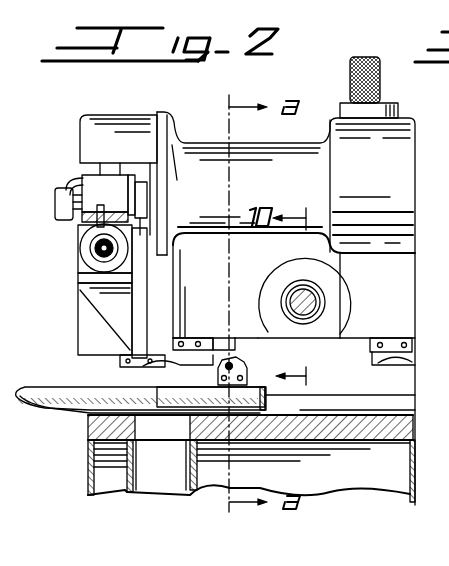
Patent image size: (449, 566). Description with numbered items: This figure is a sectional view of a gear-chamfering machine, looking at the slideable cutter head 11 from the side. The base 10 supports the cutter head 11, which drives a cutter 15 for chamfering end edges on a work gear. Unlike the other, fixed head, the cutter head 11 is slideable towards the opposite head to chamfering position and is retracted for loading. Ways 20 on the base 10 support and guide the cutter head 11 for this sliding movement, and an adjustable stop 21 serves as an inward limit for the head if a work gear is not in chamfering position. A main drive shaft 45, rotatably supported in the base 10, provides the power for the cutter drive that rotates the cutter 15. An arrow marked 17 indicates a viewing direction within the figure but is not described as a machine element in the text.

The base 10 is at (396, 390).
The cutter head 11 is at (190, 102).
The cutter 15 is at (94, 236).
The view direction arrow 17 is at (263, 373).
The ways 20 is at (415, 357).
The adjustable stop 21 is at (238, 366).
The main drive shaft 45 is at (318, 300).